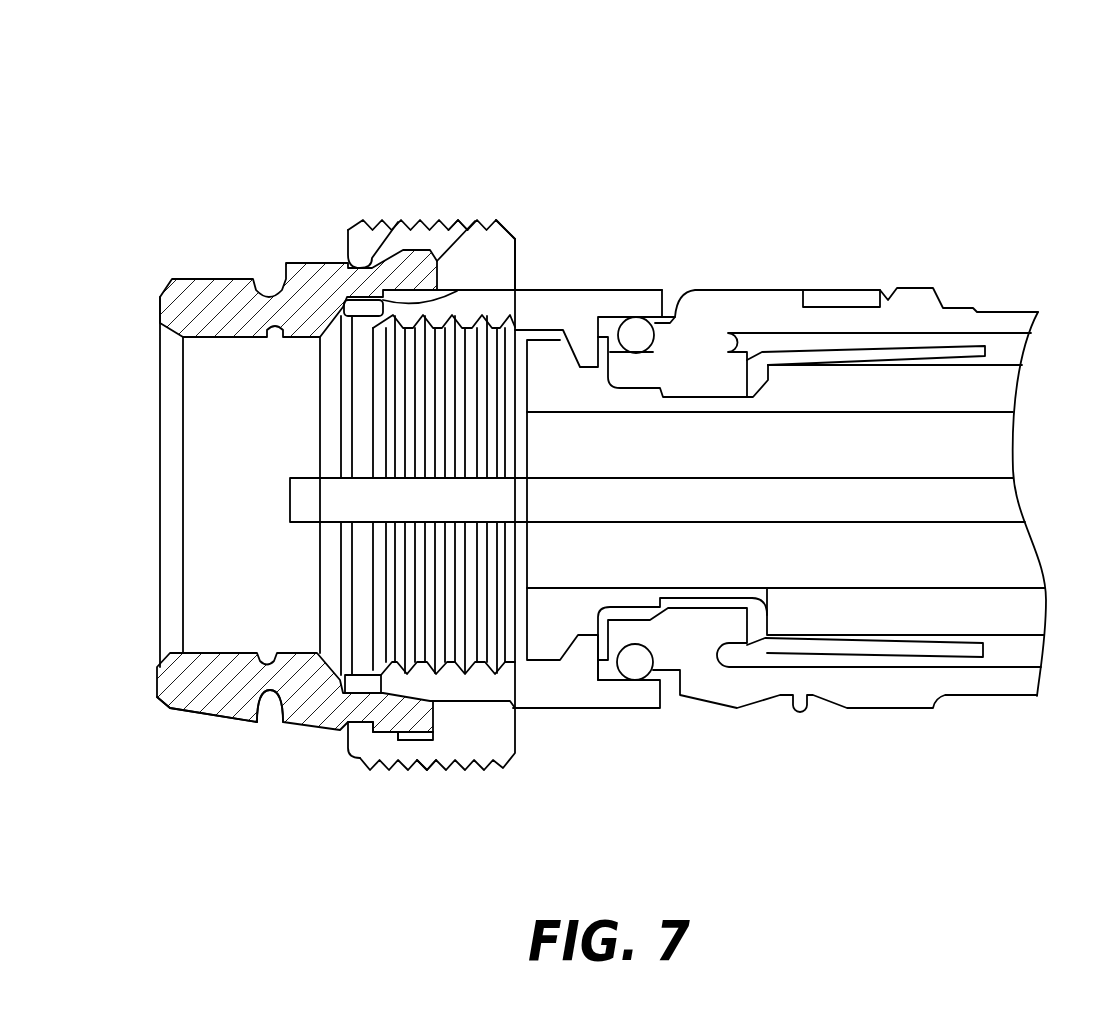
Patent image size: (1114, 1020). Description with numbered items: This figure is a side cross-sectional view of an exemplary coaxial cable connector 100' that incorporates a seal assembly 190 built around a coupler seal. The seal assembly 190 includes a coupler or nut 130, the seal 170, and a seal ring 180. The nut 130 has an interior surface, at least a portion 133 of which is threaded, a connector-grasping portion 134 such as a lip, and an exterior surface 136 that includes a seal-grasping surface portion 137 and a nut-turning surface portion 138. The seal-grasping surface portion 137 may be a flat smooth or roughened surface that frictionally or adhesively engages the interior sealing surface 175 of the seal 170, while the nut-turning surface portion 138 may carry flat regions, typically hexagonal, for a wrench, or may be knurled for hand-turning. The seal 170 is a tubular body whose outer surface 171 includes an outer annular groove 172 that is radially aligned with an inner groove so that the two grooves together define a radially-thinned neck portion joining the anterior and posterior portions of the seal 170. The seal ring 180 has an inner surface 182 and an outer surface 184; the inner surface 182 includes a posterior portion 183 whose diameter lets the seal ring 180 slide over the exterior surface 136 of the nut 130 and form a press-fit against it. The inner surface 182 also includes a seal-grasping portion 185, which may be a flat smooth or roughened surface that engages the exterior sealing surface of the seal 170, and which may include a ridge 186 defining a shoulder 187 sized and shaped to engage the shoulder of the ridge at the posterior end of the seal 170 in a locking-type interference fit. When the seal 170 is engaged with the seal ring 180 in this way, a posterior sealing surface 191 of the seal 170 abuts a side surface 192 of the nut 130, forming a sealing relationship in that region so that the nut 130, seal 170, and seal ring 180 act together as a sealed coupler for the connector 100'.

The coaxial connector 100' is at (1035, 84).
The nut 130 is at (567, 697).
The threaded portion 133 is at (481, 682).
The connector-grasping portion 134 is at (587, 672).
The exterior surface 136 is at (628, 290).
The seal-grasping surface portion 137 is at (395, 735).
The nut-turning surface portion 138 is at (563, 290).
The coupler seal 170 is at (217, 290).
The outer surface 171 is at (225, 717).
The outer annular groove 172 is at (283, 707).
The interior sealing surface 175 is at (383, 315).
The seal ring 180 is at (478, 229).
The inner surface 182 is at (460, 290).
The posterior portion 183 is at (493, 289).
The outer surface 184 is at (428, 762).
The seal-grasping portion 185 is at (360, 742).
The ridge 186 is at (349, 248).
The shoulder 187 is at (398, 221).
The seal assembly 190 is at (316, 158).
The posterior sealing surface 191 is at (465, 221).
The side surface 192 is at (423, 723).